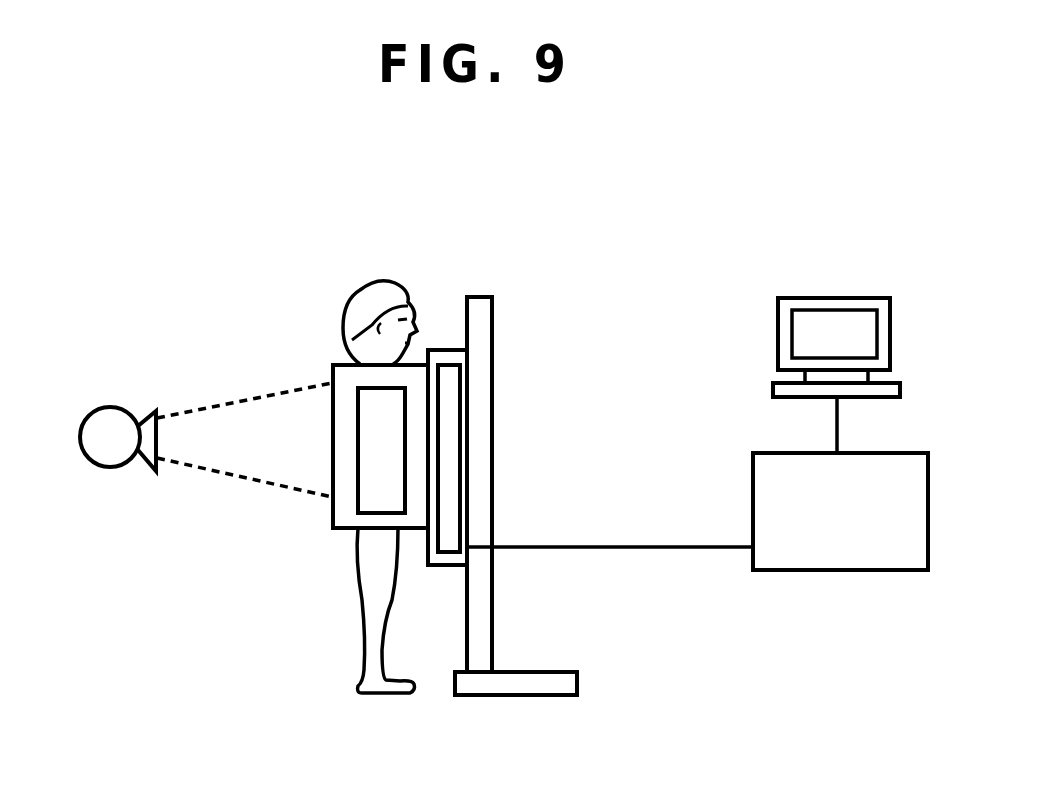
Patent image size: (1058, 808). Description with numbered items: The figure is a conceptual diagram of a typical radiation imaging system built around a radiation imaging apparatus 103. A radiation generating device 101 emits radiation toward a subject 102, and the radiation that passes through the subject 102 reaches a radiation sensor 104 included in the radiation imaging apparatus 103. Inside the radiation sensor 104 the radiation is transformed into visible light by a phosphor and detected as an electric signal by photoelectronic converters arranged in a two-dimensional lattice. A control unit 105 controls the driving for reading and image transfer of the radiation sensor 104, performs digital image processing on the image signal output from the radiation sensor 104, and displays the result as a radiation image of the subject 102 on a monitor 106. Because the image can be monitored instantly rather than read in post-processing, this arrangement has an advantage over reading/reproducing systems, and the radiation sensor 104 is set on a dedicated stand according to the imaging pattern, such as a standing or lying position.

The radiation generating device 101 is at (110, 411).
The subject 102 is at (350, 300).
The radiation imaging apparatus 103 is at (468, 419).
The radiation sensor 104 is at (460, 465).
The control unit 105 is at (822, 572).
The monitor 106 is at (850, 297).